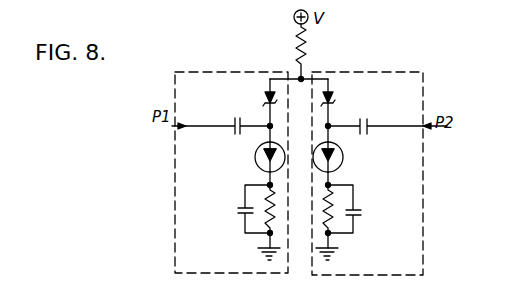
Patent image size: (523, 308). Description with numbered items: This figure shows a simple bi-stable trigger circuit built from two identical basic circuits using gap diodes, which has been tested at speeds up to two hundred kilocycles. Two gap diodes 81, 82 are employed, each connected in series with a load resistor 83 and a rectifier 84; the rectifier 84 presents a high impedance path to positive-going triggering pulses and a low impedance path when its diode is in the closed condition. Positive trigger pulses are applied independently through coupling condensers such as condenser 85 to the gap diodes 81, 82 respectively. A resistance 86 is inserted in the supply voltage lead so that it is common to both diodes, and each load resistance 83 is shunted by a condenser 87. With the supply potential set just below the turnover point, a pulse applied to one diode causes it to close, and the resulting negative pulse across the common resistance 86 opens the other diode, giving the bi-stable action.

The gap diode 81 is at (285, 142).
The gap diode 82 is at (318, 168).
The load resistor 83 is at (361, 212).
The rectifier 84 is at (339, 98).
The condenser 85 is at (364, 136).
The resistance 86 is at (308, 40).
The condenser 87 is at (333, 222).